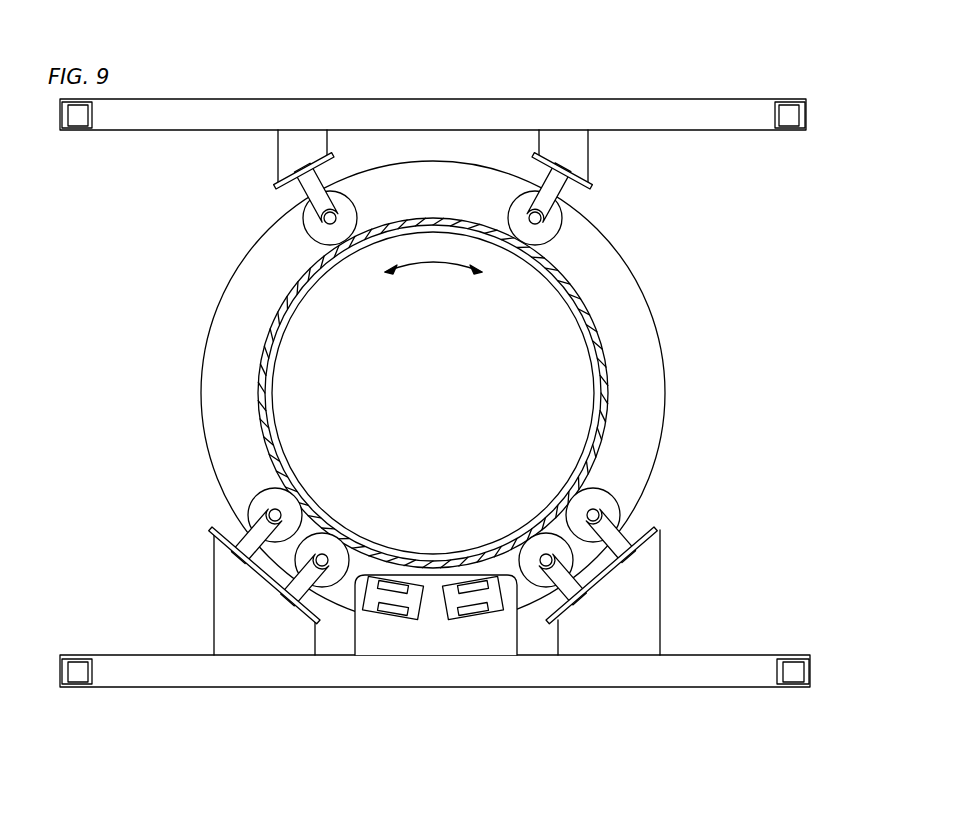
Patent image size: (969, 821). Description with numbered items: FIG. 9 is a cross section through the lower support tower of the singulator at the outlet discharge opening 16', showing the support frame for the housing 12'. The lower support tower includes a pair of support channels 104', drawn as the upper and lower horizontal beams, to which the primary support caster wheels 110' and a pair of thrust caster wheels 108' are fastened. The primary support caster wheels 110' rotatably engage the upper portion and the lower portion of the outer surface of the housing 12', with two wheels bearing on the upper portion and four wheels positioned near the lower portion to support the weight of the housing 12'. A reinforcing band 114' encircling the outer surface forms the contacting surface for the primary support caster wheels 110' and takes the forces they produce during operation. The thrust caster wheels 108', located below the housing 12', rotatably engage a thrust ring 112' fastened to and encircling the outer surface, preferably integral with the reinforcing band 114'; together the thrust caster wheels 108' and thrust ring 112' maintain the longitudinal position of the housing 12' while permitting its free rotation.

The support channels 104' is at (435, 374).
The primary support caster wheels 110' is at (439, 392).
The housing 12' is at (382, 393).
The reinforcing band 114' is at (483, 393).
The thrust ring 112' is at (466, 393).
The outlet discharge opening 16' is at (433, 330).
The thrust caster wheels 108' is at (436, 585).